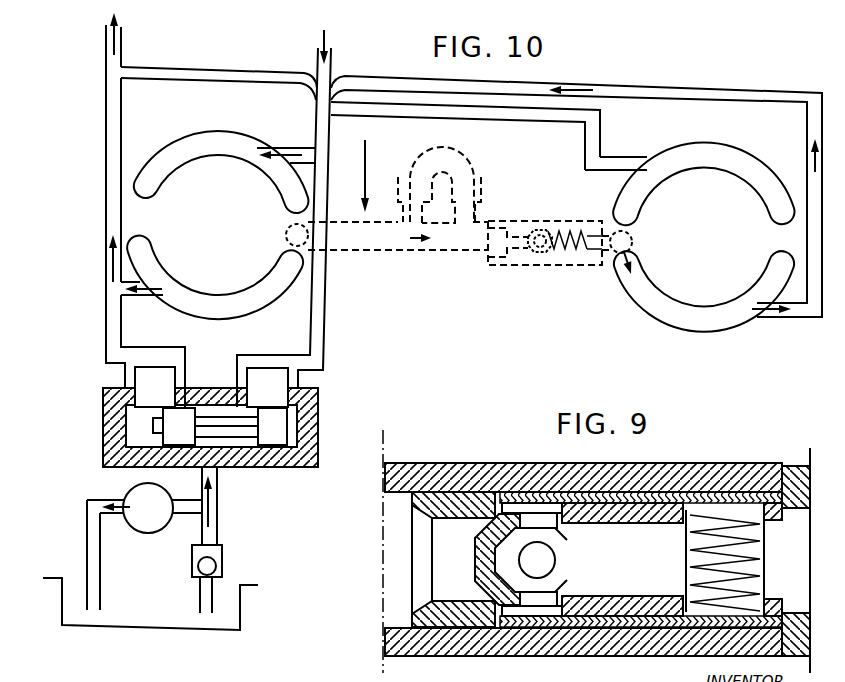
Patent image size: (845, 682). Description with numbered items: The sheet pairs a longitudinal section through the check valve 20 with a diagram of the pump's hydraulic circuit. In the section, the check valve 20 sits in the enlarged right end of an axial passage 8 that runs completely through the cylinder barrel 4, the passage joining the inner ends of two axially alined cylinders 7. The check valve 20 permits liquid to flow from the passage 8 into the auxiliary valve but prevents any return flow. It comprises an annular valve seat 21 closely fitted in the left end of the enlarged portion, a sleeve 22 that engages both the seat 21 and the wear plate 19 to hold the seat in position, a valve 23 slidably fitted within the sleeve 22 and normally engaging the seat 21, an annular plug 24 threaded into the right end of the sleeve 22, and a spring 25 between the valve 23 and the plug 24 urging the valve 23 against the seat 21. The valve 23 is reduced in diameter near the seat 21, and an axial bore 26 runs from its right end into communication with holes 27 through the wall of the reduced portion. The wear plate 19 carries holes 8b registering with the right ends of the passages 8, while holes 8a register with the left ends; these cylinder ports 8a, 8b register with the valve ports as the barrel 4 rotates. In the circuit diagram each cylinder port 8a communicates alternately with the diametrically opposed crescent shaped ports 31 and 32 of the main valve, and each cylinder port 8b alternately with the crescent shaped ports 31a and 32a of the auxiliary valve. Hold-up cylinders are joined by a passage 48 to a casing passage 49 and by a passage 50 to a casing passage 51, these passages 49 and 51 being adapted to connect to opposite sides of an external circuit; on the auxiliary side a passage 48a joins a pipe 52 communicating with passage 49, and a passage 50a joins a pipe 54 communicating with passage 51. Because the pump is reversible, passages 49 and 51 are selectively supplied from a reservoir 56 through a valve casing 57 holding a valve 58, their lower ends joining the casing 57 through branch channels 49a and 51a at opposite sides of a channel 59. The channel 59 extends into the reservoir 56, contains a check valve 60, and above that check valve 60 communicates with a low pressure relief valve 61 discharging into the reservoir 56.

In FIG. 9, the cylinder barrel 4 is at (447, 641).
In FIG. 10, the cylinders 7 is at (439, 182).
In FIG. 10, the axial passage 8 is at (436, 264).
In FIG. 9, the axial passage 8 is at (387, 592).
In FIG. 10, the holes 8a is at (278, 230).
In FIG. 10, the holes 8b is at (642, 234).
In FIG. 9, the holes 8b is at (801, 541).
In FIG. 9, the wear plate 19 is at (797, 647).
In FIG. 10, the check valve 20 is at (573, 272).
In FIG. 9, the check valve 20 is at (574, 556).
In FIG. 9, the annular valve seat 21 is at (451, 492).
In FIG. 9, the sleeve 22 is at (543, 492).
In FIG. 9, the valve 23 is at (488, 554).
In FIG. 9, the annular plug 24 is at (783, 608).
In FIG. 9, the spring 25 is at (707, 567).
In FIG. 9, the axial bore 26 is at (600, 601).
In FIG. 9, the holes 27 is at (555, 558).
In FIG. 10, the crescent shaped port 31 is at (233, 295).
In FIG. 10, the crescent shaped port 31a is at (730, 307).
In FIG. 10, the crescent shaped port 32 is at (177, 155).
In FIG. 10, the crescent shaped port 32a is at (770, 193).
In FIG. 10, the passage 48 is at (126, 291).
In FIG. 10, the passage 48a is at (807, 318).
In FIG. 10, the passage 49 is at (121, 99).
In FIG. 10, the branch channel 49a is at (125, 378).
In FIG. 10, the passage 50 is at (305, 157).
In FIG. 10, the passage 50a is at (603, 160).
In FIG. 10, the passage 51 is at (318, 106).
In FIG. 10, the branch channel 51a is at (298, 385).
In FIG. 10, the pipe 52 is at (740, 100).
In FIG. 10, the pipe 54 is at (570, 118).
In FIG. 10, the reservoir 56 is at (75, 593).
In FIG. 10, the valve casing 57 is at (320, 438).
In FIG. 10, the valve 58 is at (270, 464).
In FIG. 10, the channel 59 is at (210, 525).
In FIG. 10, the check valve 60 is at (223, 552).
In FIG. 10, the low pressure relief valve 61 is at (147, 533).